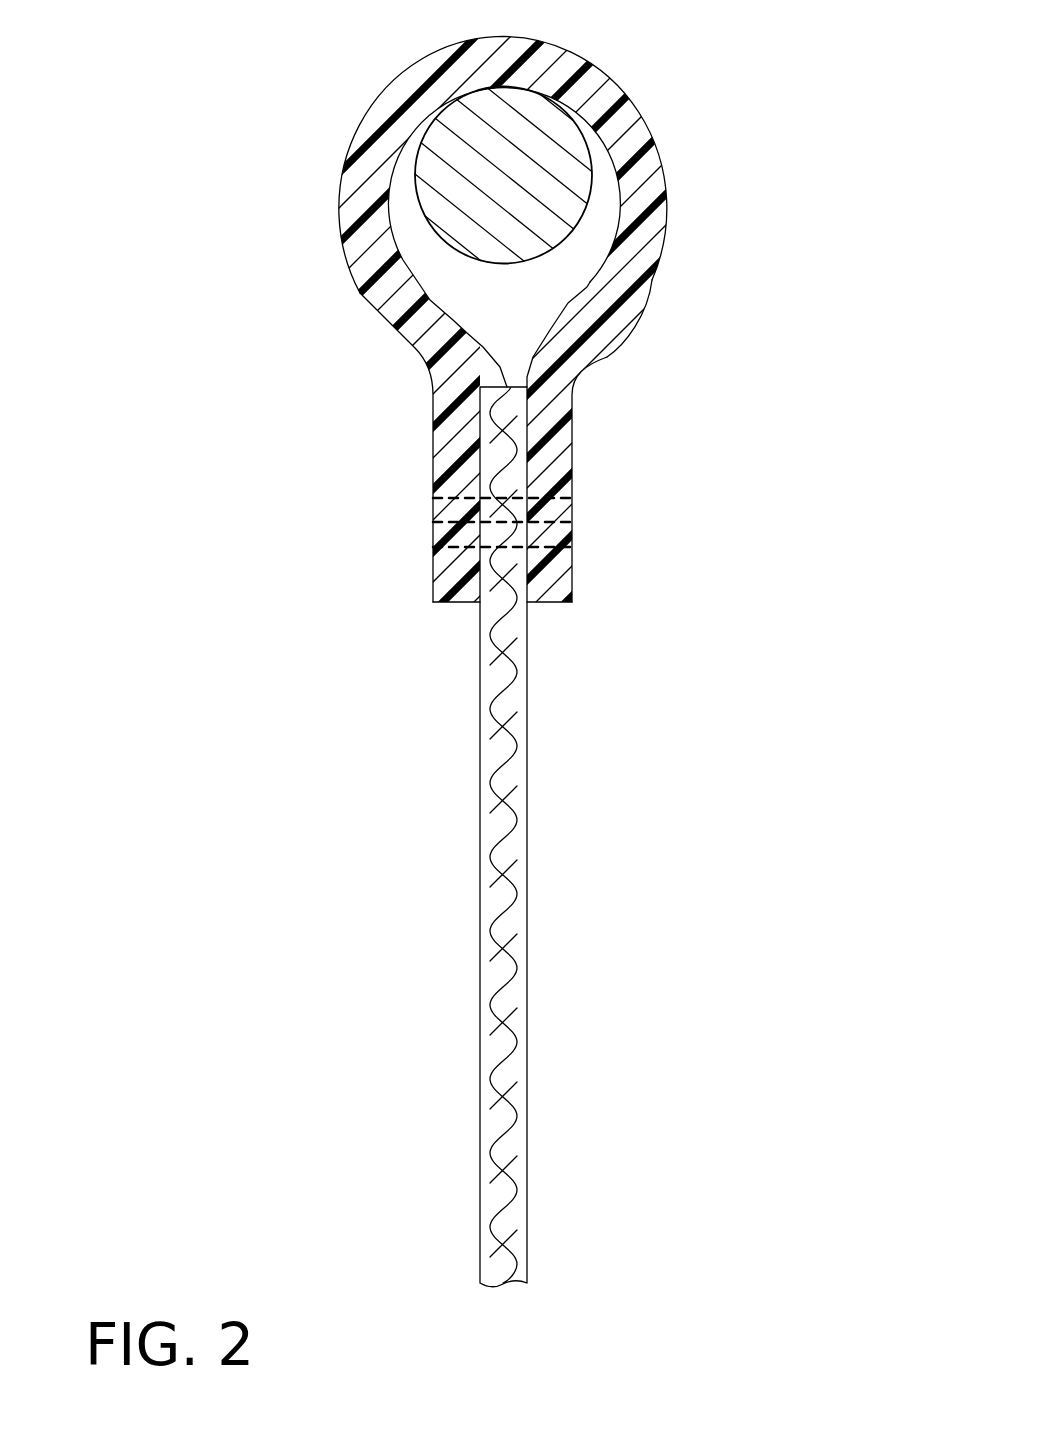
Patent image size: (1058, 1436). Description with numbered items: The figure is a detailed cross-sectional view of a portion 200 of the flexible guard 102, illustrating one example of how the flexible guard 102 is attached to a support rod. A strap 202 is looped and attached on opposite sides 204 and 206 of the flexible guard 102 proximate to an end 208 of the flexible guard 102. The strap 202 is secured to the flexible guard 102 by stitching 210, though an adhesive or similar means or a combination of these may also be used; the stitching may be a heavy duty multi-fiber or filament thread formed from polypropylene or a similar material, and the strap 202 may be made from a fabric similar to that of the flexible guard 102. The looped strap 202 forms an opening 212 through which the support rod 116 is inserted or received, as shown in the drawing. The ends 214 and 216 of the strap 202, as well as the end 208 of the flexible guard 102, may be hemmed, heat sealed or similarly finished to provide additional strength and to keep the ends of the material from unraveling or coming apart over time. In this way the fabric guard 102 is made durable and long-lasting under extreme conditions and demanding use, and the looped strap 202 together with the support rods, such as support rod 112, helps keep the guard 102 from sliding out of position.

The portion 200 is at (745, 108).
The strap 202 is at (601, 68).
The first side of the flexible guard 204 is at (480, 848).
The second side of the flexible guard 206 is at (527, 698).
The end of the flexible guard 208 is at (463, 333).
The stitching 210 is at (572, 575).
The opening 212 is at (530, 300).
The first end of the strap 214 is at (448, 604).
The second end of the strap 216 is at (557, 604).
The flexible guard 102 is at (527, 898).
The support rod 112 is at (457, 182).
The support rod 116 is at (488, 432).